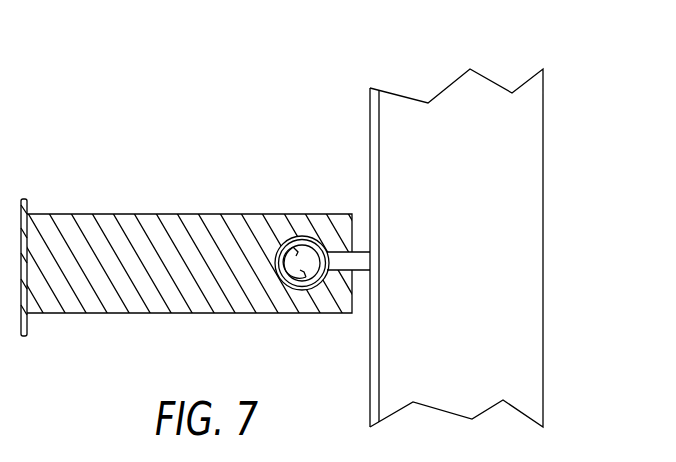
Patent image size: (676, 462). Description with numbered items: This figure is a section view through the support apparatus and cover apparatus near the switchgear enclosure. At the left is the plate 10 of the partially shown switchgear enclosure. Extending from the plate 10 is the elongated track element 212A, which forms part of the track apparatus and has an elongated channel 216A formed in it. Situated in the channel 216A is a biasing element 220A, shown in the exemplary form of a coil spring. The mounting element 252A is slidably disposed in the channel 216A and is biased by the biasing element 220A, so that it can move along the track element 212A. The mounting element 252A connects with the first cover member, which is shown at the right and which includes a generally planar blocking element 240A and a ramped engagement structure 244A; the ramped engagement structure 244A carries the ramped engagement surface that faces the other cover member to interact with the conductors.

The plate 10 is at (28, 208).
The track element 212A is at (87, 213).
The biasing element 220A is at (299, 237).
The elongated channel 216A is at (297, 274).
The mounting element 252A is at (358, 272).
The blocking element 240A is at (371, 88).
The ramped engagement structure 244A is at (544, 155).